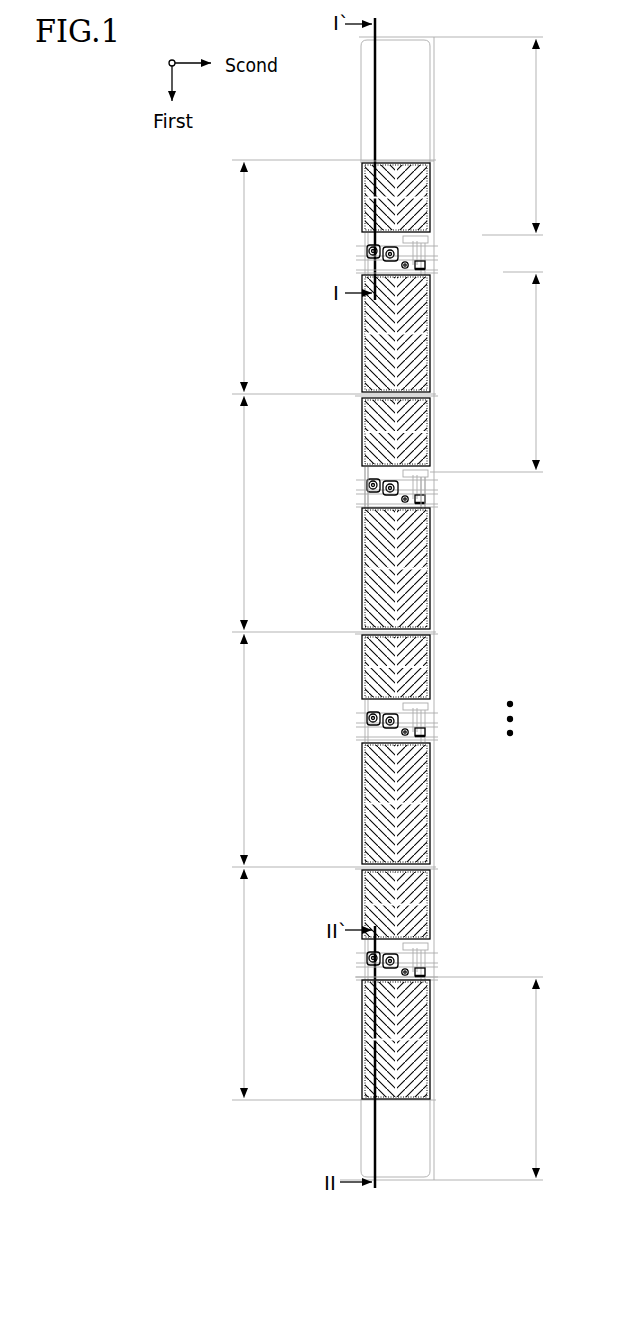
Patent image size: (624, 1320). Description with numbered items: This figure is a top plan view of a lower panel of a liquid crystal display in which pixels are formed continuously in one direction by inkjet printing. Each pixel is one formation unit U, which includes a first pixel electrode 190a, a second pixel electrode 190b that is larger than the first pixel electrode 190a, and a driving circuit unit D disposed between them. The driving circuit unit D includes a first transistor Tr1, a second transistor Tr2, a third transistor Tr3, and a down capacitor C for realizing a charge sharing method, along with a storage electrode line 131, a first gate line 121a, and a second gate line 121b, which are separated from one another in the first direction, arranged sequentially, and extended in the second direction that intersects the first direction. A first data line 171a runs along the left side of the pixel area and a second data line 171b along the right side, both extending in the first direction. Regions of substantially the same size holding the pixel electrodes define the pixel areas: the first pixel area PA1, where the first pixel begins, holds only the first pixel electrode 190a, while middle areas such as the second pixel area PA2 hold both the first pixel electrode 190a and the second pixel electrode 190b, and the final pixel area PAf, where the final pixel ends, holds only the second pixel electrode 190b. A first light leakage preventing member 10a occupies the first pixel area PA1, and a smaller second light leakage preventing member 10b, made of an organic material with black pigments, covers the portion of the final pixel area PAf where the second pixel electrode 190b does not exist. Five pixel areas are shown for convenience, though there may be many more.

The first light leakage preventing member 10a is at (420, 90).
The second light leakage preventing member 10b is at (422, 1136).
The storage electrode line 131 is at (418, 161).
The first pixel electrode 190a is at (416, 185).
The second pixel electrode 190b is at (415, 367).
The first transistor Tr1 is at (366, 246).
The second transistor Tr2 is at (422, 249).
The third transistor Tr3 is at (428, 264).
The down capacitor C is at (430, 237).
The first gate line 121a is at (360, 247).
The second gate line 121b is at (360, 271).
The first data line 171a is at (362, 482).
The second data line 171b is at (430, 500).
The driving circuit unit D is at (312, 253).
The formation unit U is at (233, 630).
The first pixel area PA1 is at (557, 136).
The second pixel area PA2 is at (557, 372).
The final pixel area PAf is at (558, 1078).